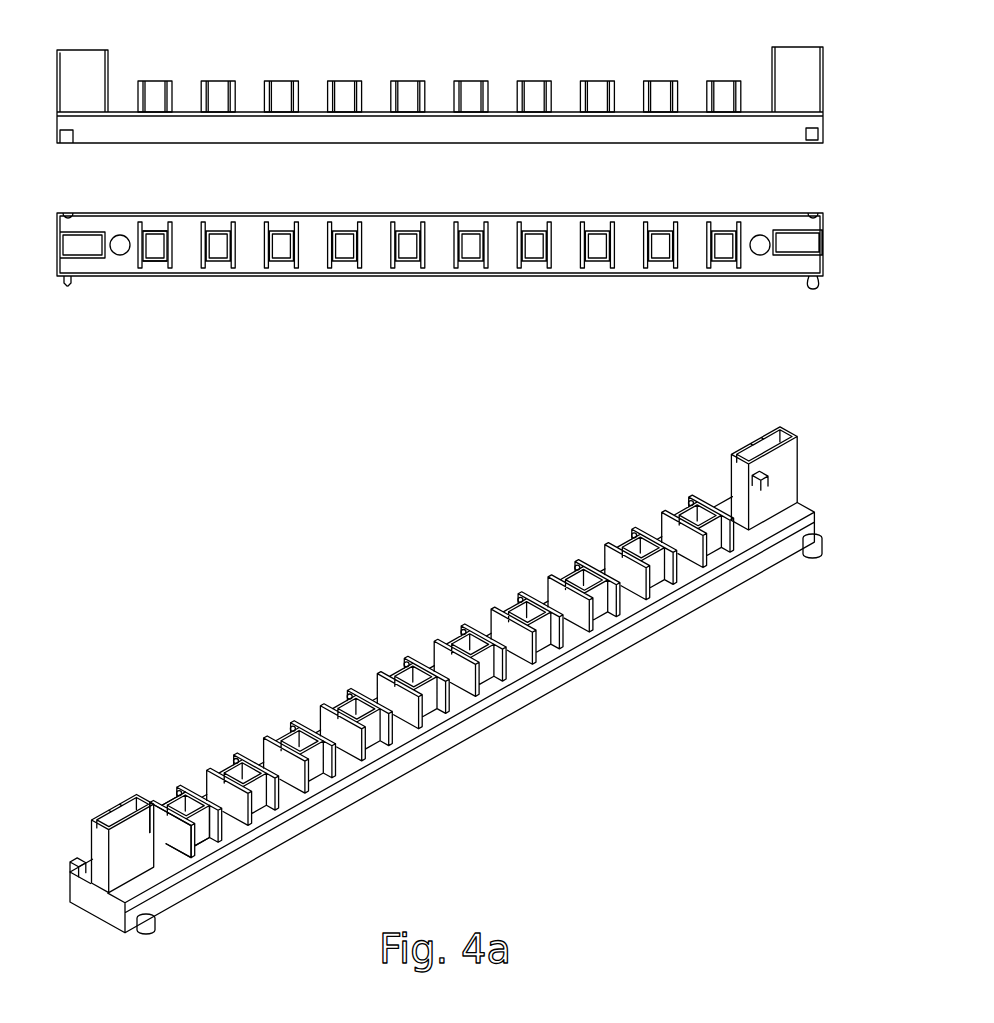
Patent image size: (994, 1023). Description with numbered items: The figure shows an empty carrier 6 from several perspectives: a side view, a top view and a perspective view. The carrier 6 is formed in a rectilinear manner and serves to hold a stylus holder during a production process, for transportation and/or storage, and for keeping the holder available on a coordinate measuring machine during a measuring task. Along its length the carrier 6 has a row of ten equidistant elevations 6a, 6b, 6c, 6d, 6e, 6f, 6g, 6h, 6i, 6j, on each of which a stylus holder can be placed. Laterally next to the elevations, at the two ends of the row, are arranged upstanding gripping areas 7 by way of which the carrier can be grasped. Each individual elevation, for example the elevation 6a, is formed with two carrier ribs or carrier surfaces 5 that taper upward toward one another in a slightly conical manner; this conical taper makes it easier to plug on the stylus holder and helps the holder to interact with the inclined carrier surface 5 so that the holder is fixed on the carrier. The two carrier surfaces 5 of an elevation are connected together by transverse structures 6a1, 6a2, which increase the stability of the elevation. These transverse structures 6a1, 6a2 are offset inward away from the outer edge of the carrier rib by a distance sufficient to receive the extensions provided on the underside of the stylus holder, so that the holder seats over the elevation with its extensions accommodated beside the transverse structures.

The carrier surfaces 5 is at (138, 258).
The carrier 6 is at (690, 701).
The elevation 6a is at (178, 791).
The elevation 6b is at (226, 767).
The elevation 6c is at (283, 735).
The elevation 6d is at (340, 702).
The elevation 6e is at (397, 670).
The elevation 6f is at (454, 638).
The elevation 6g is at (511, 606).
The elevation 6h is at (568, 574).
The elevation 6i is at (624, 541).
The elevation 6j is at (681, 509).
The transverse structure 6a1 is at (155, 232).
The transverse structure 6a2 is at (153, 262).
The gripping area 7 is at (122, 835).